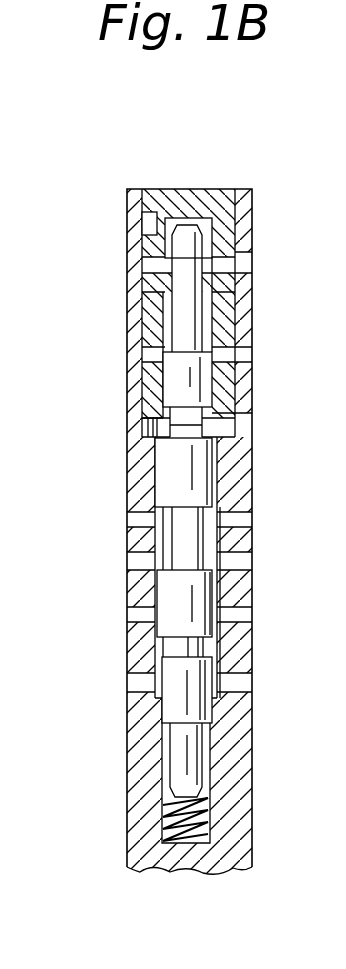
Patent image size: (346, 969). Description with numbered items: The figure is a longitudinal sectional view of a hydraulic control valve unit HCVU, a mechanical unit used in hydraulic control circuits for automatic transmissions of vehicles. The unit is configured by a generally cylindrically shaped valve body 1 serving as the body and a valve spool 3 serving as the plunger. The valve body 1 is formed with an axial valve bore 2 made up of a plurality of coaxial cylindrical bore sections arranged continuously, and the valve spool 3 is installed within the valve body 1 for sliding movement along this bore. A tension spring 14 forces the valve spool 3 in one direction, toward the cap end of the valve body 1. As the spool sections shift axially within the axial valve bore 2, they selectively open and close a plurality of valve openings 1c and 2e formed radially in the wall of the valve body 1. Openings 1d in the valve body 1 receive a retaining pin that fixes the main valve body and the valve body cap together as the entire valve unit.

The hydraulic control valve unit HCVU is at (186, 186).
The valve body 1 is at (127, 450).
The valve openings 1c is at (240, 355).
The openings 1d is at (133, 221).
The valve openings 2e is at (148, 352).
The axial valve bore 2 is at (160, 540).
The valve spool 3 is at (160, 587).
The tension spring 14 is at (205, 822).